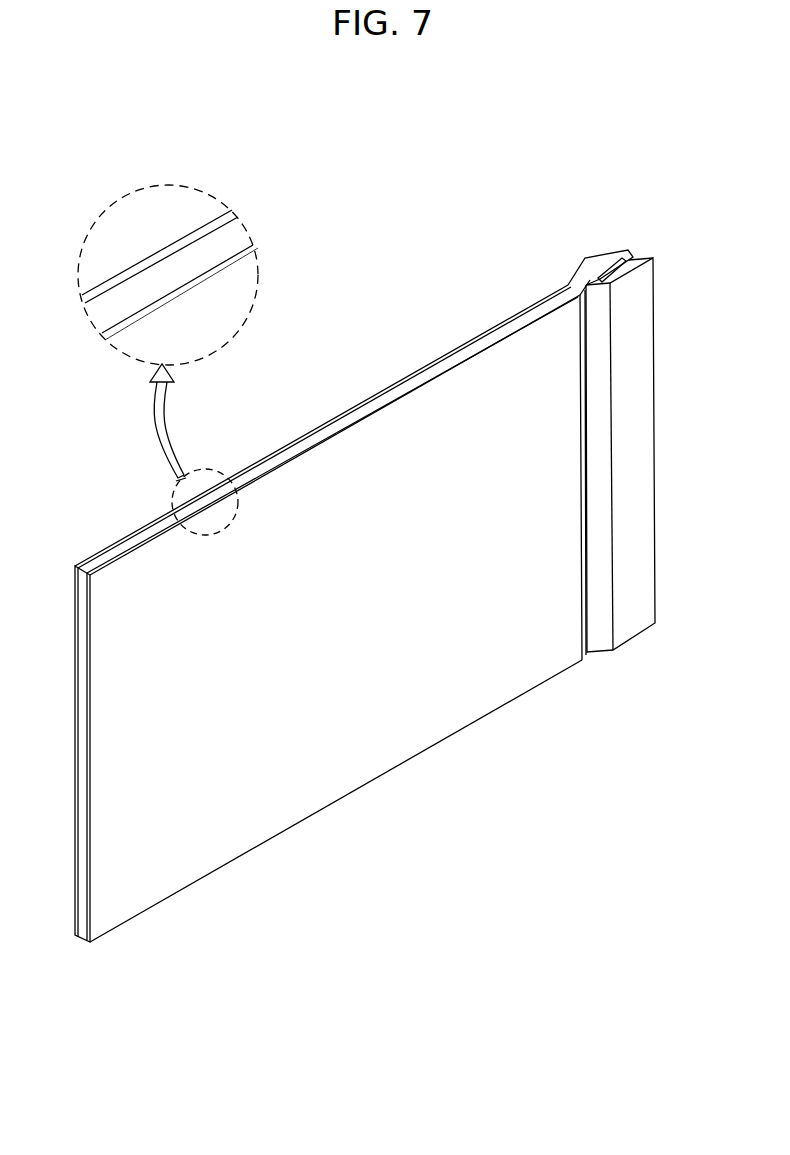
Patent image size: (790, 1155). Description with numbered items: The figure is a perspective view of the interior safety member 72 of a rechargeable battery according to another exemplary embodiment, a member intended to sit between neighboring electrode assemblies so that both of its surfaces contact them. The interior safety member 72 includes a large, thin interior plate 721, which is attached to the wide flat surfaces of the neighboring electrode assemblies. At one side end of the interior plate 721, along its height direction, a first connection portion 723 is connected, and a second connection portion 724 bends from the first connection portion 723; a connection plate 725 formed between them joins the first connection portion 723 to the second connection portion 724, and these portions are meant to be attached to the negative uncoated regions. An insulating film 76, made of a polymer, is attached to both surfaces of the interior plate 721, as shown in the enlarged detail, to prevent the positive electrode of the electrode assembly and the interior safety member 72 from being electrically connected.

The interior safety member 72 is at (378, 384).
The interior plate 721 is at (237, 237).
The first connection portion 723 is at (592, 260).
The second connection portion 724 is at (645, 252).
The connection plate 725 is at (607, 268).
The insulating film 76 is at (200, 227).